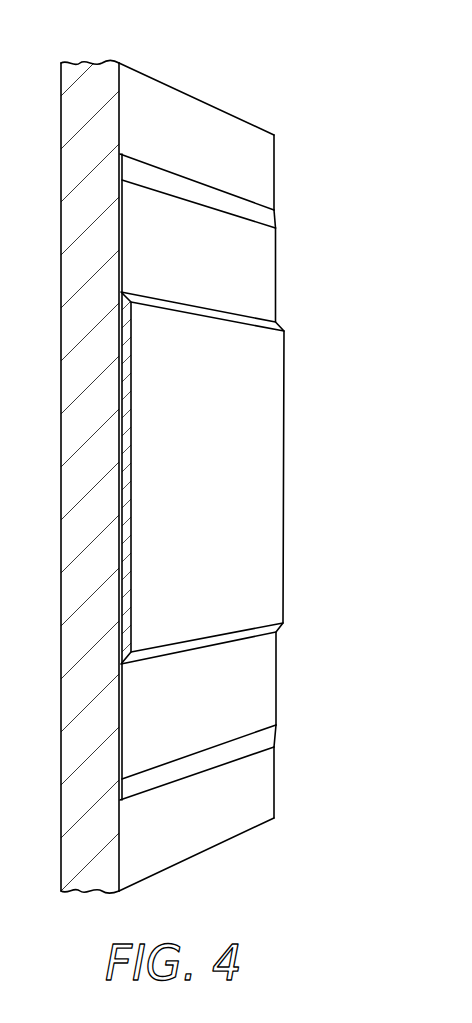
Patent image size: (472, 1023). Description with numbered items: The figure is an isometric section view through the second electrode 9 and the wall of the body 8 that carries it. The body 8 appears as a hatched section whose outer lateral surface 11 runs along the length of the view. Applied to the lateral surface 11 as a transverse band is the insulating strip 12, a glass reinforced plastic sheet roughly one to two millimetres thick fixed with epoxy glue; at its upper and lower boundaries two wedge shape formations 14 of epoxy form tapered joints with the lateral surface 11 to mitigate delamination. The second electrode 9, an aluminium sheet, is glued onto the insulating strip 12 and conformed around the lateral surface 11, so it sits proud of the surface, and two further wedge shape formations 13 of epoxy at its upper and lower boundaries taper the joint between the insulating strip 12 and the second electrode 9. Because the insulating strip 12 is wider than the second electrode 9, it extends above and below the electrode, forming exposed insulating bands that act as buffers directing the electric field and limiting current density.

The body 8 is at (88, 73).
The second electrode 9 is at (277, 395).
The lateral surface 11 is at (265, 158).
The insulating strip 12 is at (268, 258).
The further wedge shape formations 13 is at (283, 630).
The wedge shape formations 14 is at (268, 738).